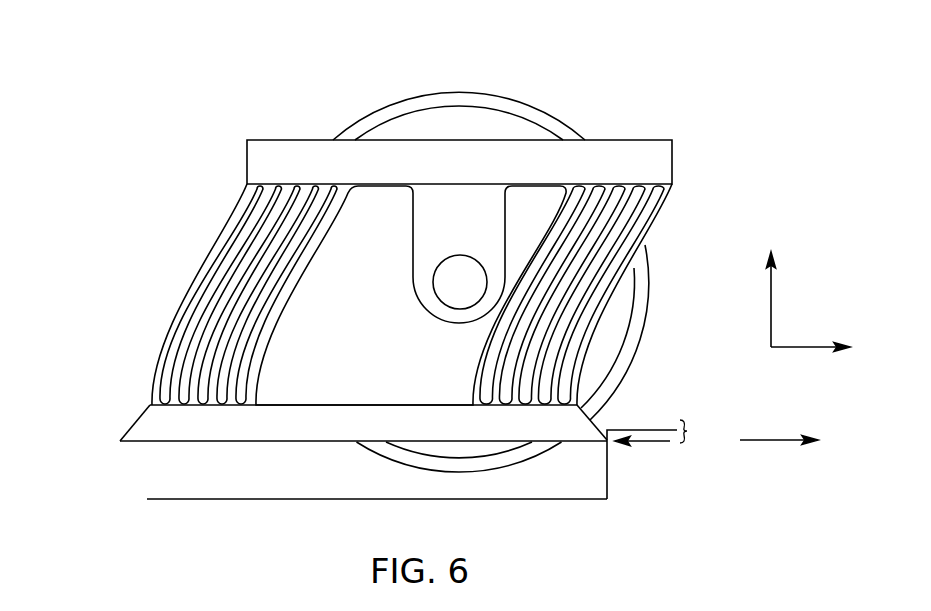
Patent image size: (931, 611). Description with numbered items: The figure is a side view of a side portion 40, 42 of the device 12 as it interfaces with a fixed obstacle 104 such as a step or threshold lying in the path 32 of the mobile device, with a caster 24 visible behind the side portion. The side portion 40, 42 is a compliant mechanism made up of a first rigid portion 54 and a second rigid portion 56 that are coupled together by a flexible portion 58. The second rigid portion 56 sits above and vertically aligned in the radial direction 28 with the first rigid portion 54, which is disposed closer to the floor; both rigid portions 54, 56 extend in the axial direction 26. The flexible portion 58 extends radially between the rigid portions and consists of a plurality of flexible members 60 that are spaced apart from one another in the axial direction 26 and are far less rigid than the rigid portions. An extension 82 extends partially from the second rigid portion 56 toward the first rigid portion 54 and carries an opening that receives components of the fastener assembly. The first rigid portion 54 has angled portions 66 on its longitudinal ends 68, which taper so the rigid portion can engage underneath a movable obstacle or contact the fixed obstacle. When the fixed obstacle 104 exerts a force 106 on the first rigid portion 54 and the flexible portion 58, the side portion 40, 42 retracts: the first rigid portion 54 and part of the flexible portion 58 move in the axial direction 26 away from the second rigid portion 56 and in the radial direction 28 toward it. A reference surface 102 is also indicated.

The device 12 is at (392, 279).
The caster 24 is at (545, 95).
The first side portion 40 is at (412, 279).
The second side portion 42 is at (412, 279).
The second rigid portion 56 is at (655, 158).
The flexible portion 58 is at (387, 294).
The flexible members 60 is at (219, 252).
The extension 82 is at (412, 254).
The angled portions 66 is at (146, 408).
The longitudinal ends 68 is at (124, 430).
The first rigid portion 54 is at (389, 423).
The reference line 102 is at (184, 502).
The fixed obstacle 104 is at (606, 472).
The force 106 is at (652, 444).
The radial direction 28 is at (768, 300).
The axial direction 26 is at (803, 350).
The path 32 is at (780, 443).